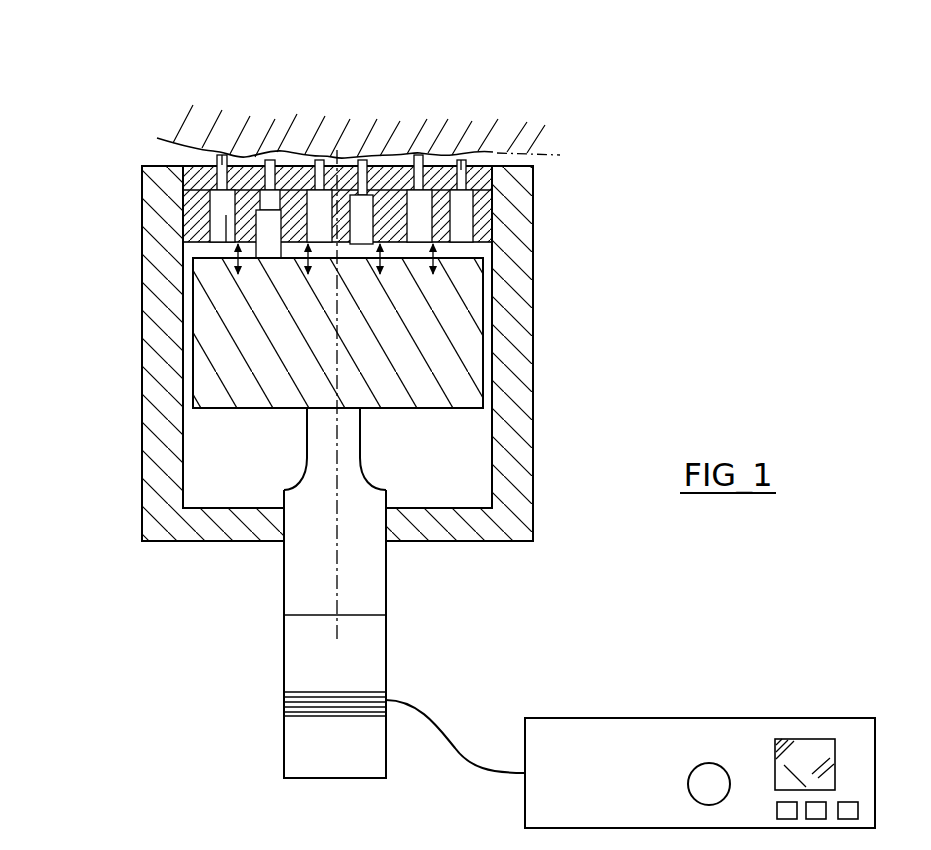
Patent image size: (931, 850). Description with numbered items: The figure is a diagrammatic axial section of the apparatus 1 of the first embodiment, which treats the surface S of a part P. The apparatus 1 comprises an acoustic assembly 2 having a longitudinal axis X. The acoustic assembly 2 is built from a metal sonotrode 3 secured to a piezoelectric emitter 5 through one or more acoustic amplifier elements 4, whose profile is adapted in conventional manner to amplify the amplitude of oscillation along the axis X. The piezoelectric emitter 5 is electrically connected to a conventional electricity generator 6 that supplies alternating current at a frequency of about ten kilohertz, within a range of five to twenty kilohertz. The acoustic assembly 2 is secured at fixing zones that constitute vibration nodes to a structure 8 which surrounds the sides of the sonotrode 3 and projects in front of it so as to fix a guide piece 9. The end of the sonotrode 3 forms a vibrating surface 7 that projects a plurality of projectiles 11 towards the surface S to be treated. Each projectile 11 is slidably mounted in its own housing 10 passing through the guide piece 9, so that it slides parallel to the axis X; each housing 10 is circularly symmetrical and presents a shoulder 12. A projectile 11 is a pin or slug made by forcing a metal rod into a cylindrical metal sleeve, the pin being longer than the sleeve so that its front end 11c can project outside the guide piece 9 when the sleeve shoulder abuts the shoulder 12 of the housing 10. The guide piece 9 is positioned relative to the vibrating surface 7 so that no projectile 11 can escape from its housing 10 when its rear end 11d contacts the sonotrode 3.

The apparatus 1 is at (115, 152).
The acoustic assembly 2 is at (396, 467).
The sonotrode 3 is at (218, 362).
The acoustic amplifier element 4 is at (297, 583).
The piezoelectric emitter 5 is at (303, 745).
The electricity generator 6 is at (628, 737).
The vibrating surface 7 is at (213, 262).
The structure 8 is at (153, 447).
The guide piece 9 is at (495, 212).
The housing 10 is at (486, 178).
The projectile 11 is at (222, 210).
The front end of pin 11c is at (227, 150).
The rear end of projectile 11d is at (310, 262).
The shoulder 12 is at (497, 153).
The surface S is at (192, 138).
The part P is at (277, 133).
The longitudinal axis X is at (333, 462).